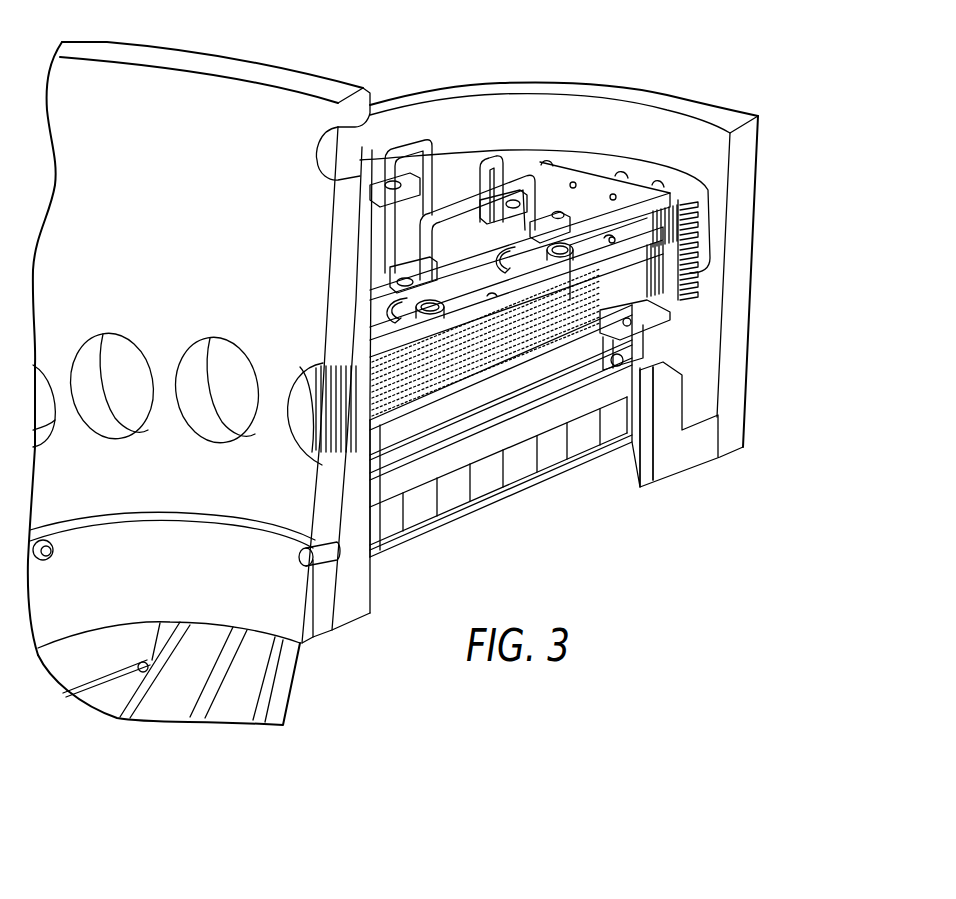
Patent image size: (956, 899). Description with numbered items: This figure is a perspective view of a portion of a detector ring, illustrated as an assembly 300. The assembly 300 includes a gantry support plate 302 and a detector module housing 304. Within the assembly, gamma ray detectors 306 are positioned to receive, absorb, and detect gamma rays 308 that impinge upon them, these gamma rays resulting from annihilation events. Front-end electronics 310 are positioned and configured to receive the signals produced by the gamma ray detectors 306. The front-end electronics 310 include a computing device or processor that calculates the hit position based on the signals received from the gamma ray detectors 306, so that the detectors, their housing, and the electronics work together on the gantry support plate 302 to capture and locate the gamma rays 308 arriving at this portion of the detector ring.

The assembly 300 is at (782, 90).
The gantry support plate 302 is at (295, 505).
The detector module housing 304 is at (597, 205).
The gamma ray detectors 306 is at (547, 478).
The gamma rays 308 is at (513, 490).
The front-end electronics 310 is at (667, 320).